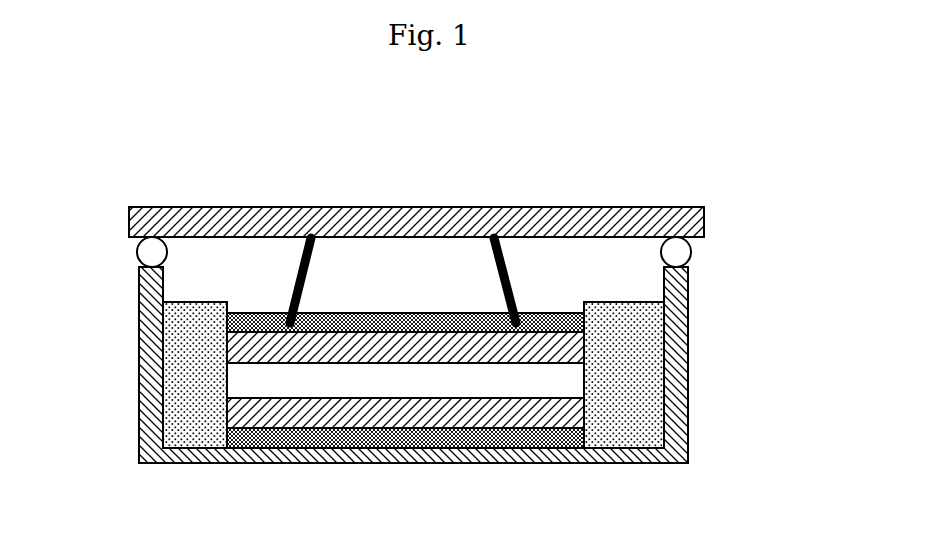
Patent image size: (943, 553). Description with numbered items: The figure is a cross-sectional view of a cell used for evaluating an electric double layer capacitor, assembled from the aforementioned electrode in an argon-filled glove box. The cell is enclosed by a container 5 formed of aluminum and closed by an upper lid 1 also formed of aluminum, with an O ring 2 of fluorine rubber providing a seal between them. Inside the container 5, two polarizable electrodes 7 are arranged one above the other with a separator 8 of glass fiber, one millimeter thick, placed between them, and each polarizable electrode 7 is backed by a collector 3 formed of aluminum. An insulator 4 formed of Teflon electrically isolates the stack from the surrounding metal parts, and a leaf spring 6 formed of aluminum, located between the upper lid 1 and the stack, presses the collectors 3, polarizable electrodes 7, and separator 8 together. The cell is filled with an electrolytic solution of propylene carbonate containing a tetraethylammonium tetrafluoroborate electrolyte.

The upper lid 1 is at (634, 207).
The O ring 2 is at (678, 249).
The collectors 3 is at (587, 326).
The insulator 4 is at (625, 382).
The container 5 is at (677, 442).
The leaf spring 6 is at (293, 278).
The polarizable electrodes 7 is at (227, 343).
The separator 8 is at (247, 382).